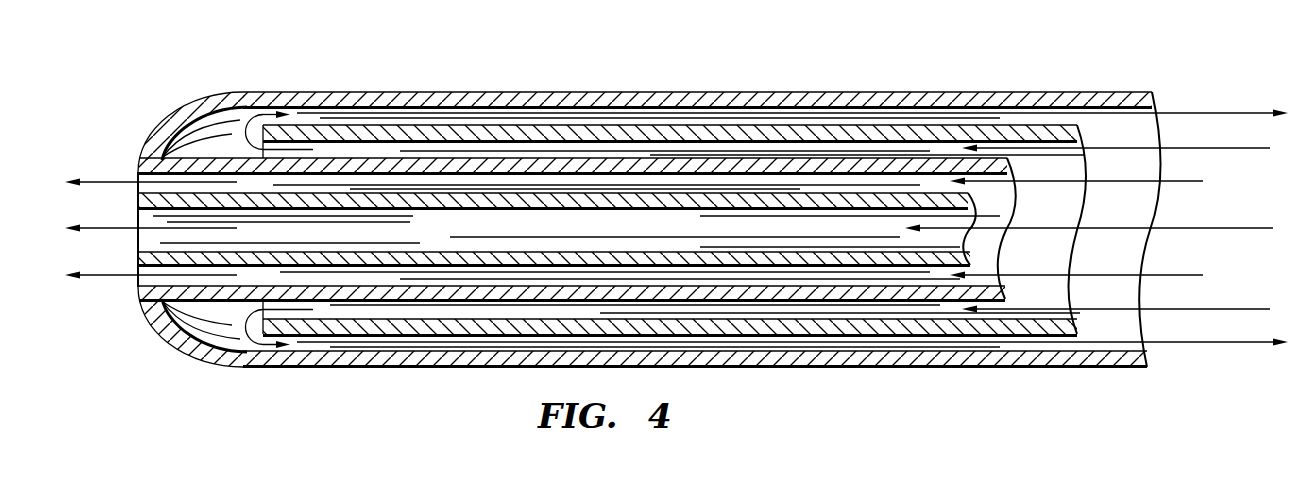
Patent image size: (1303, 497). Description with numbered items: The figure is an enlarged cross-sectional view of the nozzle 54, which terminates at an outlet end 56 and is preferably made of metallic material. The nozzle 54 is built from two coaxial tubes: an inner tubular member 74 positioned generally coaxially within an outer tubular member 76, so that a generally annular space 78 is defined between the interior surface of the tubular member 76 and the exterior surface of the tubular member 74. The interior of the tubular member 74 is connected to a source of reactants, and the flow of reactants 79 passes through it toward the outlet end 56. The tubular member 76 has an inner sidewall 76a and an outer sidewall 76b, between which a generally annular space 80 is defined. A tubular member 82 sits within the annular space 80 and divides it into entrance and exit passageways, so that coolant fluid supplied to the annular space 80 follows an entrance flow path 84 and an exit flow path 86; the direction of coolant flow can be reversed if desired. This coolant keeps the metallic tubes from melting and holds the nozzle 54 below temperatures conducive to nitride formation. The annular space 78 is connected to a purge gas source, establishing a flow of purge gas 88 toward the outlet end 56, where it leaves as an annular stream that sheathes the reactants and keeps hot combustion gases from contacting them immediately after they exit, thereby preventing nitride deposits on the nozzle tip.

The nozzle 54 is at (342, 76).
The outlet end 56 is at (133, 218).
The tubular member 74 is at (413, 206).
The tubular member 76 is at (548, 92).
The inner sidewall 76a is at (481, 166).
The outer sidewall 76b is at (670, 97).
The annular space 78 is at (138, 174).
The flow of reactants 79 is at (1253, 227).
The annular space 80 is at (221, 127).
The tubular member 82 is at (737, 127).
The entrance flow path 84 is at (1248, 148).
The exit flow path 86 is at (1232, 112).
The flow of purge gas 88 is at (1190, 182).